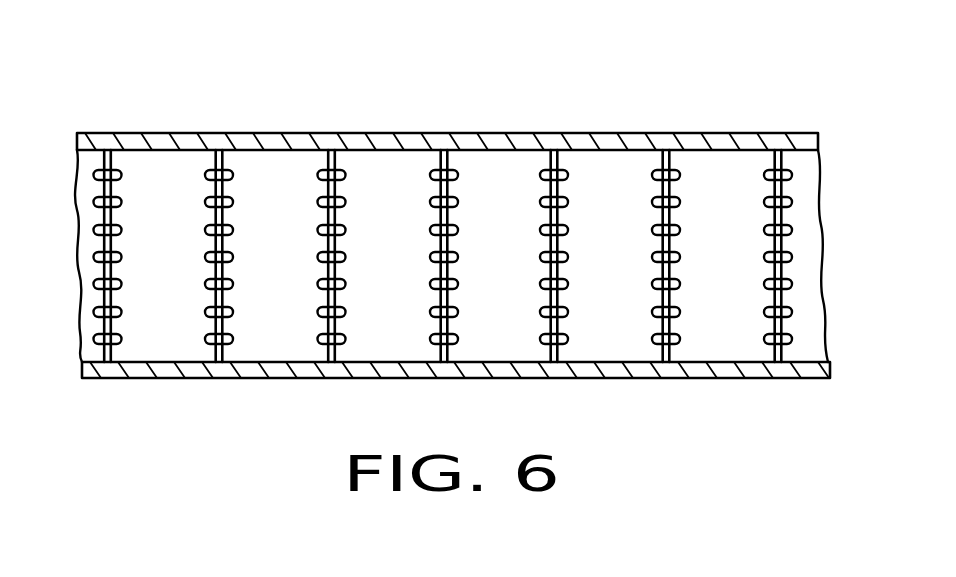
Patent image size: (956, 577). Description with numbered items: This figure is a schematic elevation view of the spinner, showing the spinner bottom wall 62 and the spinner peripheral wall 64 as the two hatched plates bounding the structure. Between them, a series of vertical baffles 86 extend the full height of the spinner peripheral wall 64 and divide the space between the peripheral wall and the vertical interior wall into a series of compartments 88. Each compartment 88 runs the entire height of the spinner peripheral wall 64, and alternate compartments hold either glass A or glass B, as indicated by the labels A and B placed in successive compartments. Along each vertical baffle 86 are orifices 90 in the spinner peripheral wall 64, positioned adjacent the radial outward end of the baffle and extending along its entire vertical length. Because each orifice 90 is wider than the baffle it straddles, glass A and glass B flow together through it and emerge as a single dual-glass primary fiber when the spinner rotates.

The spinner bottom wall 62 is at (371, 388).
The spinner peripheral wall 64 is at (746, 258).
The vertical baffles 86 is at (767, 192).
The compartments 88 is at (498, 167).
The orifices 90 is at (310, 165).
The glass A is at (150, 165).
The glass B is at (243, 327).